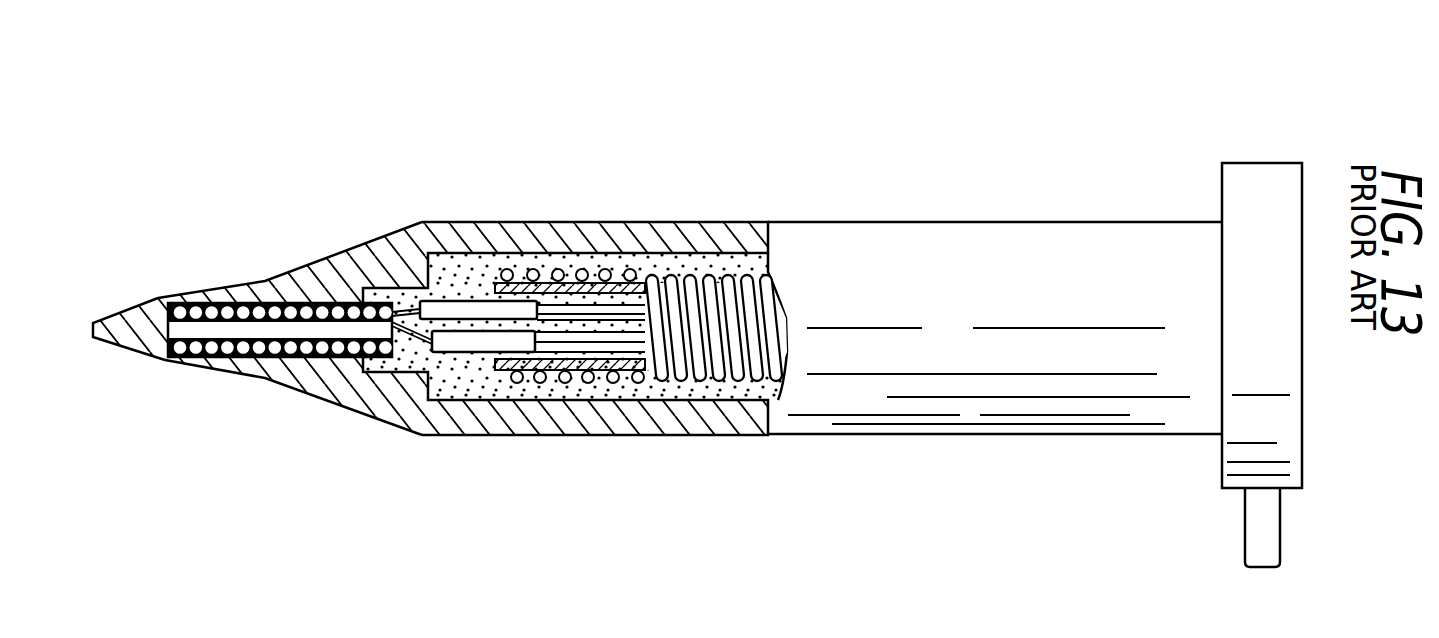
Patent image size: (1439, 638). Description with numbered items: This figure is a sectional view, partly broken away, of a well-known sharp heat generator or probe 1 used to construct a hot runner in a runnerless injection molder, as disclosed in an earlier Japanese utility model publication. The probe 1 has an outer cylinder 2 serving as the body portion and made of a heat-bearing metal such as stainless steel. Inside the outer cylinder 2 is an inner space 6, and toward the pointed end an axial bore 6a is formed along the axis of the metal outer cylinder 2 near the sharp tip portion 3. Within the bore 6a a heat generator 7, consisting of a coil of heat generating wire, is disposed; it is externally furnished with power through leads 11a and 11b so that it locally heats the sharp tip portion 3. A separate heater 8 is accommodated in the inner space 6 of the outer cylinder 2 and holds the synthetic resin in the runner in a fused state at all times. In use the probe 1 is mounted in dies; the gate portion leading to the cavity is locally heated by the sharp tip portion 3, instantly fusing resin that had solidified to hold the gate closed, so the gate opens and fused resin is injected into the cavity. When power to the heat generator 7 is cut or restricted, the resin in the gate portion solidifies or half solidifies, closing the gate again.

The probe 1 is at (910, 187).
The outer cylinder 2 is at (1053, 228).
The sharp tip portion 3 is at (147, 308).
The inner space 6 is at (478, 257).
The axial bore 6a is at (227, 358).
The heat generator 7 is at (298, 303).
The heater 8 is at (727, 277).
The lead 11a is at (588, 303).
The lead 11b is at (580, 345).